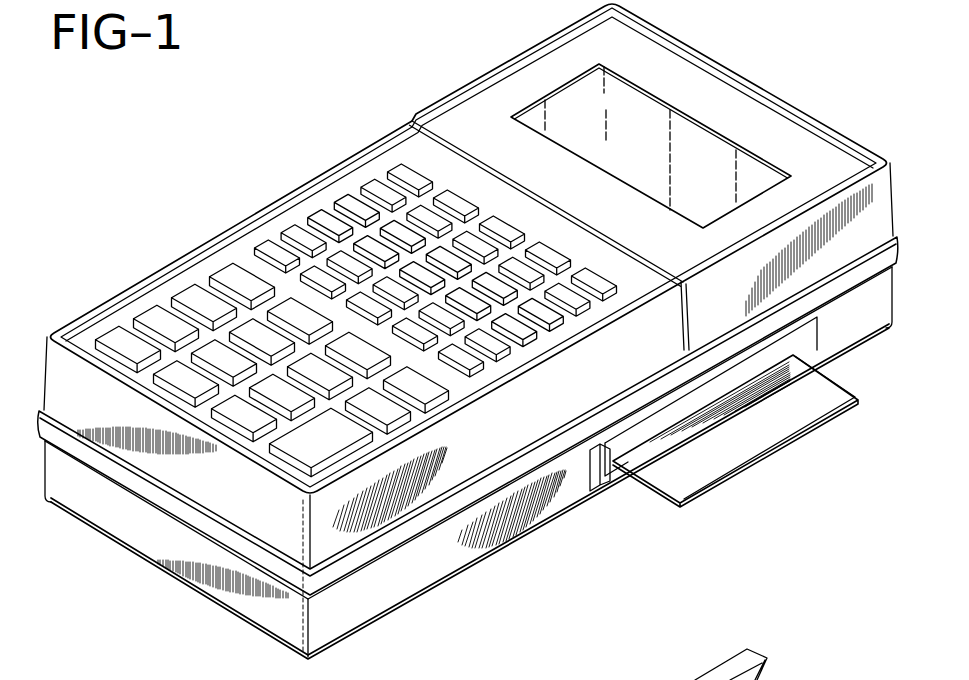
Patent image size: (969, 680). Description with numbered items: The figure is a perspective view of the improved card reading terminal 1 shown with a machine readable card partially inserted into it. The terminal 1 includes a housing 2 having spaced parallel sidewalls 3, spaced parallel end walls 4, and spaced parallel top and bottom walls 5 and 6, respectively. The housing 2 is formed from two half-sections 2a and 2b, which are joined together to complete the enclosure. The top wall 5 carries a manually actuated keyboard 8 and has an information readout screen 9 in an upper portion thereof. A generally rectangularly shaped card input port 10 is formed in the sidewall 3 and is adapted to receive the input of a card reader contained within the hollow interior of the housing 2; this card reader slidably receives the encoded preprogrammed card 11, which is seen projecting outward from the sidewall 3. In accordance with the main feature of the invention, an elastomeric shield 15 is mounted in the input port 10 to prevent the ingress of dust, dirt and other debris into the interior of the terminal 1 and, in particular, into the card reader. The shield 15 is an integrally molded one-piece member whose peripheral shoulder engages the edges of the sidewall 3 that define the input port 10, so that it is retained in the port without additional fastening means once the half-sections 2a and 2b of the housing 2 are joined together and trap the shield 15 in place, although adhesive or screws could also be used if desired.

The card reading terminal 1 is at (455, 342).
The housing 2 is at (452, 469).
The half-section of housing 2a is at (57, 373).
The half-section of housing 2b is at (374, 604).
The sidewall 3 is at (181, 257).
The end wall 4 is at (763, 79).
The top wall 5 is at (340, 320).
The bottom wall 6 is at (491, 556).
The keyboard 8 is at (157, 313).
The information readout screen 9 is at (557, 110).
The card input port 10 is at (640, 419).
The encoded preprogrammed card 11 is at (772, 458).
The elastomeric shield 15 is at (720, 372).